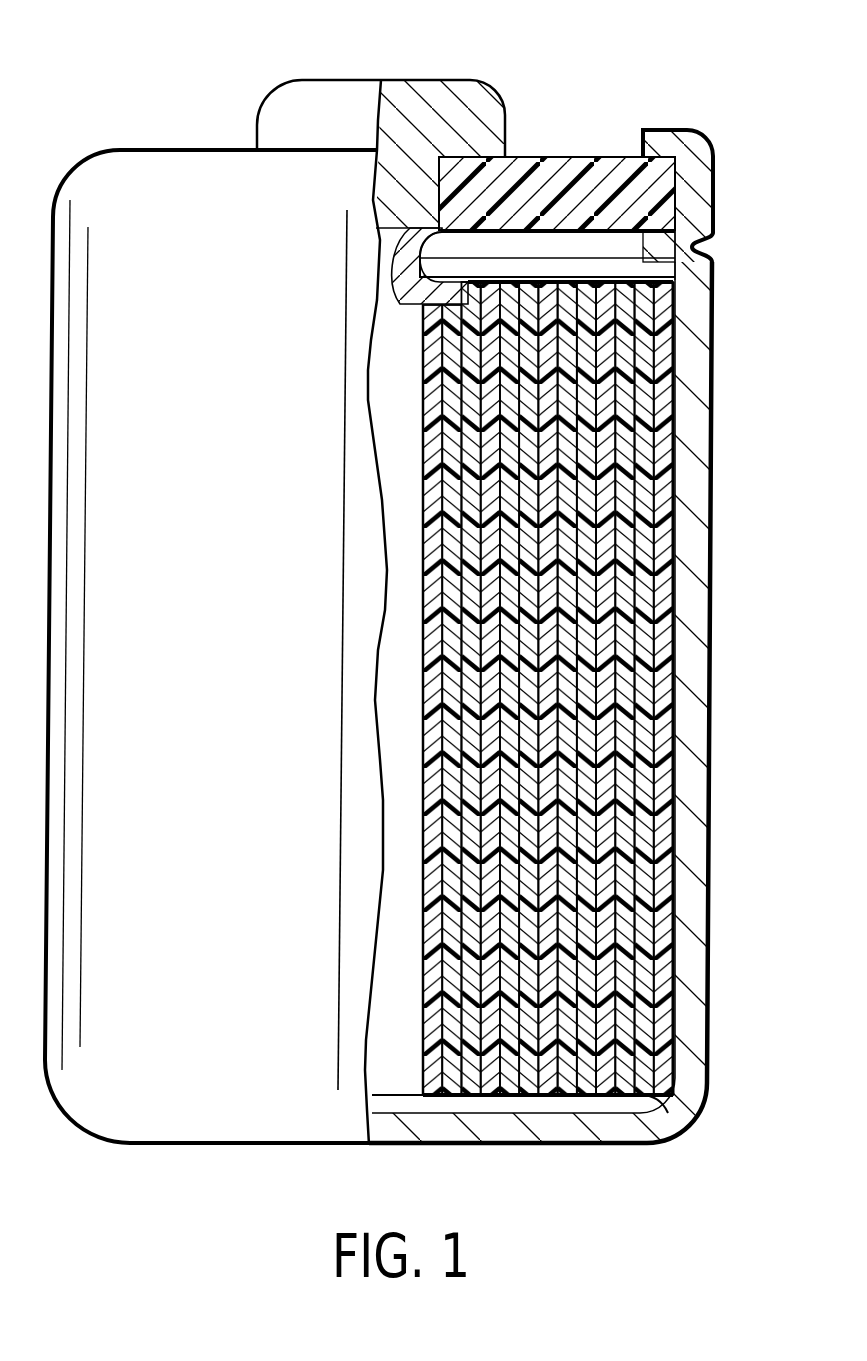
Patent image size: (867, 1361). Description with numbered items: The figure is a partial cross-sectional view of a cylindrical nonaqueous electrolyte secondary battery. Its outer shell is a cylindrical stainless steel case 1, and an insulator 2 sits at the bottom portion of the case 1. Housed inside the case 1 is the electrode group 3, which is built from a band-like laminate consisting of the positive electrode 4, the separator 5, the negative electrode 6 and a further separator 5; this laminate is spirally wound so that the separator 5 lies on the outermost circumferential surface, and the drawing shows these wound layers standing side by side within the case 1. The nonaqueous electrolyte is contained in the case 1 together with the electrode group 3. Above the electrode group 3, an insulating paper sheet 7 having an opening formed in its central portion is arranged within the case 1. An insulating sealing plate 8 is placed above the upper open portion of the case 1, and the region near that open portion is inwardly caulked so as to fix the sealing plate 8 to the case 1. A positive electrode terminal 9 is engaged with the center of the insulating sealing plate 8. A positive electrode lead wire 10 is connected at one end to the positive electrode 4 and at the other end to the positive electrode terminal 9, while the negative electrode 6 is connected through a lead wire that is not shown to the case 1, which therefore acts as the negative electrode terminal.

The cylindrical stainless steel case 1 is at (690, 847).
The insulator 2 is at (590, 1102).
The electrode group 3 is at (613, 688).
The positive electrode 4 is at (612, 415).
The separator 5 is at (630, 468).
The negative electrode 6 is at (763, 388).
The insulating paper sheet 7 is at (657, 272).
The insulating sealing plate 8 is at (582, 157).
The positive electrode terminal 9 is at (426, 80).
The positive electrode lead wire 10 is at (402, 277).